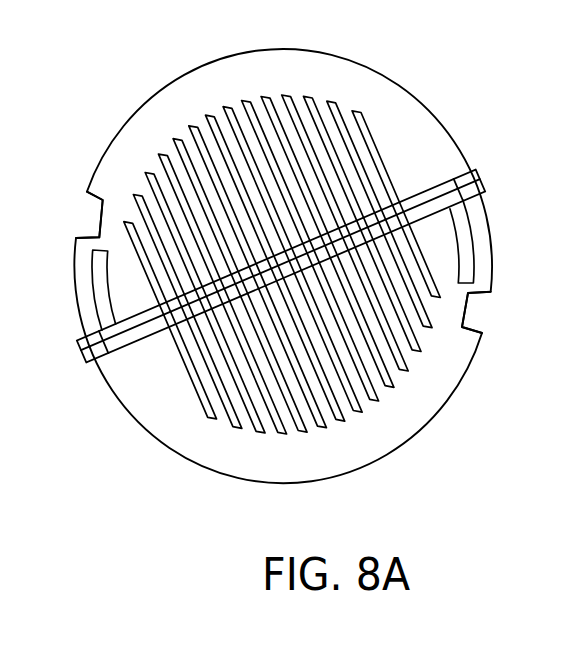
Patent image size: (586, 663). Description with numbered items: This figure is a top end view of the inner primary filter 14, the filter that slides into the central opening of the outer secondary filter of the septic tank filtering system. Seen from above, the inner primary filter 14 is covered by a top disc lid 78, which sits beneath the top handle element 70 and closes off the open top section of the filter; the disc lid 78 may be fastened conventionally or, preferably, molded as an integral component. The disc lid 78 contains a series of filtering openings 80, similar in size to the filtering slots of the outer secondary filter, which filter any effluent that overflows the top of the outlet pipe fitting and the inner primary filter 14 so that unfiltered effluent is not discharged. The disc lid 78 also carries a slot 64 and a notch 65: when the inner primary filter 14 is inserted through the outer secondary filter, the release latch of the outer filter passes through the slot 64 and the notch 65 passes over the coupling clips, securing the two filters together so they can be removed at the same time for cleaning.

The inner primary filter 14 is at (303, 311).
The slot 64 is at (458, 240).
The notch 65 is at (90, 218).
The top handle element 70 is at (470, 171).
The top disc lid 78 is at (227, 458).
The filtering openings 80 is at (387, 395).